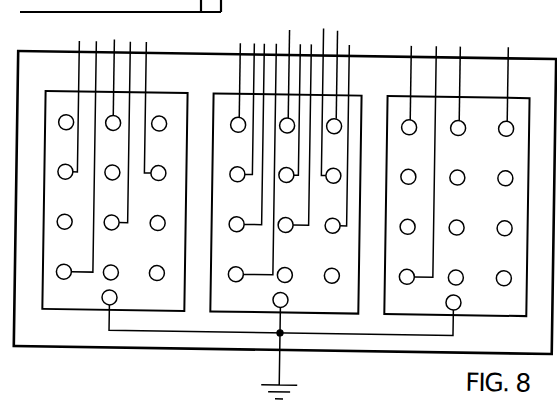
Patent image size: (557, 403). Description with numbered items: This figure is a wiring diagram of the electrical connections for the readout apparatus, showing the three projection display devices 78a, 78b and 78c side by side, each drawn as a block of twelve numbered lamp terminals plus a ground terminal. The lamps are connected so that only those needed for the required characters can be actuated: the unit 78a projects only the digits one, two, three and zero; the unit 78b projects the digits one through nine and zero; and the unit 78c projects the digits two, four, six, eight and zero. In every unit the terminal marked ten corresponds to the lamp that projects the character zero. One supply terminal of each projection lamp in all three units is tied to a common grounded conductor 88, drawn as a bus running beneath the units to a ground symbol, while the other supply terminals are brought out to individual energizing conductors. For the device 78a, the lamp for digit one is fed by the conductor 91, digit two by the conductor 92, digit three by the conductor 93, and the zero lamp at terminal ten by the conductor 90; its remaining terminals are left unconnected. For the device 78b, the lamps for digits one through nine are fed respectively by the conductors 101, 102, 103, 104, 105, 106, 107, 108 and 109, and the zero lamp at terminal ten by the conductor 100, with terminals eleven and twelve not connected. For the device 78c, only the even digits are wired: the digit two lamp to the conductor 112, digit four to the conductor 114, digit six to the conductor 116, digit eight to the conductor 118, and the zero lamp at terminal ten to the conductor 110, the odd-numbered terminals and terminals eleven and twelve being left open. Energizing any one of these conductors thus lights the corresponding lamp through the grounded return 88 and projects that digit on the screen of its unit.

The display device 78a is at (508, 306).
The display device 78b is at (340, 308).
The display device 78c is at (170, 300).
The grounded conductor 88 is at (472, 300).
The energizing conductor 90 is at (434, 161).
The energizing conductor 91 is at (409, 51).
The energizing conductor 92 is at (458, 53).
The energizing conductor 93 is at (506, 51).
The energizing conductor 100 is at (274, 254).
The energizing conductor 101 is at (238, 80).
The energizing conductor 102 is at (287, 30).
The energizing conductor 103 is at (335, 33).
The energizing conductor 104 is at (252, 148).
The energizing conductor 105 is at (298, 150).
The energizing conductor 106 is at (321, 28).
The energizing conductor 107 is at (262, 197).
The energizing conductor 108 is at (309, 200).
The energizing conductor 109 is at (347, 80).
The energizing conductor 110 is at (94, 150).
The energizing conductor 112 is at (112, 42).
The energizing conductor 114 is at (77, 79).
The energizing conductor 116 is at (144, 76).
The energizing conductor 118 is at (128, 197).